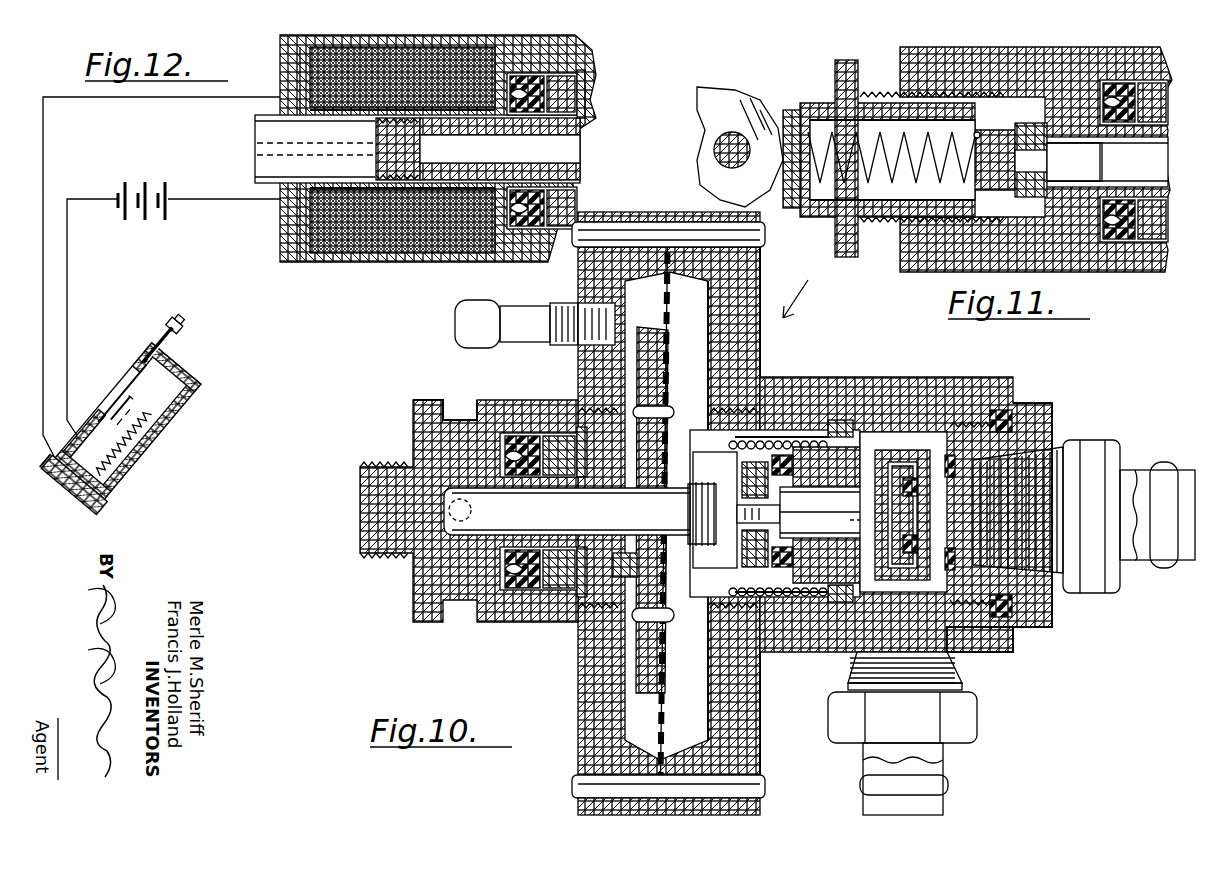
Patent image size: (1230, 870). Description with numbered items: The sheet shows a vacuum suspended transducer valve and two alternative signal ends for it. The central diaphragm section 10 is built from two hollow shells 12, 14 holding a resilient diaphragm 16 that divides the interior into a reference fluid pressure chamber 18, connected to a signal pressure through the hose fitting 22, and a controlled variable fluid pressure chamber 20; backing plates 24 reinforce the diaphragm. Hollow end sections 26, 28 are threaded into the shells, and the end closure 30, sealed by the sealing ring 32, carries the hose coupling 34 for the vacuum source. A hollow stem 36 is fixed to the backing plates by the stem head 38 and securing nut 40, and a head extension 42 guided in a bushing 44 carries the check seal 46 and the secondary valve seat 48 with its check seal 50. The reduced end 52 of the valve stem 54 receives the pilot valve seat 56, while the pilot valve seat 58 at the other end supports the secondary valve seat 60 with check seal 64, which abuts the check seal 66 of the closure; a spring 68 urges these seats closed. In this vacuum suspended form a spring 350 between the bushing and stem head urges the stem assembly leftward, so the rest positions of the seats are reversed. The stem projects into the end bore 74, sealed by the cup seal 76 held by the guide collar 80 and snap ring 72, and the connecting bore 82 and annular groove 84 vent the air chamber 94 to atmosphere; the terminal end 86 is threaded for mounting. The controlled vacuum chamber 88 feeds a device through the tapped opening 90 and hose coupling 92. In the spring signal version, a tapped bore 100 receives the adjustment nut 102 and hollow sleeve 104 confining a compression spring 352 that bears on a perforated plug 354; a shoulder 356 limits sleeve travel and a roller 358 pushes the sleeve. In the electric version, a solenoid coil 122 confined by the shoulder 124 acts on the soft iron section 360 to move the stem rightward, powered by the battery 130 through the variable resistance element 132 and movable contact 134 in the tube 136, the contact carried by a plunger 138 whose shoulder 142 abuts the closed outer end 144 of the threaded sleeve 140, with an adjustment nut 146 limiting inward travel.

In FIG. 10, the diaphragm section 10 is at (800, 286).
In FIG. 10, the hollow shell 12 is at (578, 748).
In FIG. 10, the hollow shell 14 is at (760, 740).
In FIG. 10, the resilient diaphragm 16 is at (660, 742).
In FIG. 10, the reference fluid pressure chamber 18 is at (625, 713).
In FIG. 10, the controlled variable fluid pressure chamber 20 is at (708, 700).
In FIG. 10, the hose fitting 22 is at (455, 318).
In FIG. 10, the backing plates 24 is at (663, 330).
In FIG. 12, the end section 26 is at (572, 60).
In FIG. 11, the end section 26 is at (1107, 280).
In FIG. 10, the end section 26 is at (492, 622).
In FIG. 10, the end section 28 is at (965, 385).
In FIG. 10, the end closure 30 is at (1052, 422).
In FIG. 10, the sealing ring 32 is at (1012, 410).
In FIG. 10, the hose coupling 34 is at (1100, 450).
In FIG. 12, the stem 36 is at (560, 170).
In FIG. 11, the stem 36 is at (1105, 190).
In FIG. 10, the stem 36 is at (580, 547).
In FIG. 10, the stem head 38 is at (686, 438).
In FIG. 10, the securing nut 40 is at (625, 580).
In FIG. 10, the head extension 42 is at (850, 446).
In FIG. 10, the bushing 44 is at (840, 420).
In FIG. 10, the check seal 46 is at (785, 478).
In FIG. 10, the secondary valve seat 48 is at (742, 466).
In FIG. 10, the check seal 50 is at (738, 542).
In FIG. 10, the reduced end 52 is at (760, 518).
In FIG. 10, the valve stem 54 is at (858, 507).
In FIG. 10, the pilot valve seat 56 is at (705, 530).
In FIG. 10, the pilot valve seat 58 is at (892, 532).
In FIG. 10, the secondary valve seat 60 is at (935, 470).
In FIG. 10, the check seal 64 is at (903, 512).
In FIG. 10, the check seal 66 is at (945, 560).
In FIG. 10, the spring 68 is at (695, 492).
In FIG. 12, the snap ring 72 is at (590, 92).
In FIG. 10, the snap ring 72 is at (588, 438).
In FIG. 11, the end bore 74 is at (1060, 130).
In FIG. 12, the cup seal 76 is at (538, 112).
In FIG. 11, the cup seal 76 is at (1140, 200).
In FIG. 10, the cup seal 76 is at (522, 548).
In FIG. 12, the guide collar 80 is at (575, 105).
In FIG. 11, the guide collar 80 is at (1160, 98).
In FIG. 10, the guide collar 80 is at (560, 476).
In FIG. 10, the connecting bore 82 is at (472, 510).
In FIG. 10, the annular groove 84 is at (455, 398).
In FIG. 10, the terminal end 86 is at (360, 472).
In FIG. 10, the controlled vacuum chamber 88 is at (920, 590).
In FIG. 10, the tapped opening 90 is at (948, 615).
In FIG. 10, the hose coupling 92 is at (960, 740).
In FIG. 10, the air chamber 94 is at (765, 432).
In FIG. 11, the tapped bore 100 is at (1022, 131).
In FIG. 11, the adjustment nut 102 is at (843, 60).
In FIG. 11, the hollow sleeve 104 is at (828, 118).
In FIG. 12, the solenoid coil 122 is at (340, 258).
In FIG. 12, the shoulder 124 is at (292, 240).
In FIG. 12, the battery 130 is at (168, 190).
In FIG. 12, the variable resistance element 132 is at (143, 434).
In FIG. 12, the movable contact 134 is at (63, 496).
In FIG. 12, the tube 136 is at (157, 463).
In FIG. 12, the plunger 138 is at (168, 322).
In FIG. 12, the threaded sleeve 140 is at (83, 383).
In FIG. 12, the shoulder 142 is at (203, 384).
In FIG. 12, the closed outer end 144 is at (123, 361).
In FIG. 12, the adjustment nut 146 is at (229, 328).
In FIG. 10, the spring 350 is at (780, 440).
In FIG. 11, the compression spring 352 is at (838, 178).
In FIG. 11, the perforated plug 354 is at (1045, 173).
In FIG. 11, the shoulder 356 is at (786, 108).
In FIG. 11, the roller 358 is at (730, 86).
In FIG. 12, the soft iron section 360 is at (256, 128).